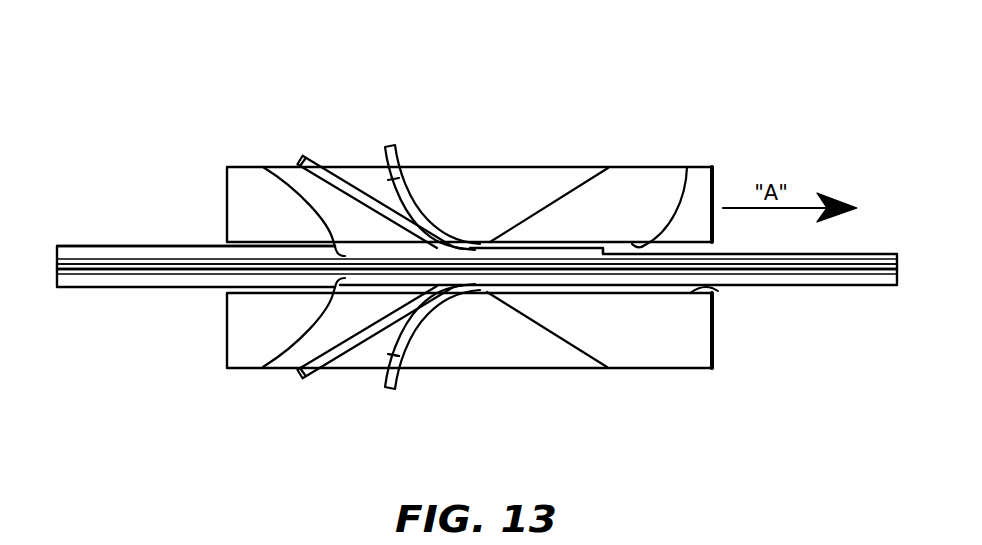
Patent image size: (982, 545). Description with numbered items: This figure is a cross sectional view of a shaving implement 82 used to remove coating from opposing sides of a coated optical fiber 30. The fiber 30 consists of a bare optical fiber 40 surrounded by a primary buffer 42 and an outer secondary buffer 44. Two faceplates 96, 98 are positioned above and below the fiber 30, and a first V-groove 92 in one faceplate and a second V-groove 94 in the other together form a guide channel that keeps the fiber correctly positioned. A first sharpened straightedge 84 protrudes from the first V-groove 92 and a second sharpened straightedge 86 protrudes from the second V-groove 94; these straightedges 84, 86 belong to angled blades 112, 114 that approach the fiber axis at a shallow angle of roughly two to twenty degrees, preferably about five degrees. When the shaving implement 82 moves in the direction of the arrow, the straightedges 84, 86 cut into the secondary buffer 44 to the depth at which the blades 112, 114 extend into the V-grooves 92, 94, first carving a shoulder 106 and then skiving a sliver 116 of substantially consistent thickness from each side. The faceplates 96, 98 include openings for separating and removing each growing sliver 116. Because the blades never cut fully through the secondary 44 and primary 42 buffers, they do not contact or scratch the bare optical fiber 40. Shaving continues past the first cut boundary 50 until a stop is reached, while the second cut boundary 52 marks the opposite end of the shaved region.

The coated optical fiber 30 is at (167, 310).
The bare optical fiber 40 is at (120, 268).
The primary buffer 42 is at (140, 262).
The secondary buffer 44 is at (102, 250).
The first cut boundary 50 is at (603, 278).
The second cut boundary 52 is at (395, 356).
The shaving implement 82 is at (469, 221).
The first sharpened straightedge 84 is at (445, 248).
The second sharpened straightedge 86 is at (447, 290).
The first V-groove 92 is at (687, 167).
The second V-groove 94 is at (711, 288).
The first faceplate 96 is at (550, 180).
The second faceplate 98 is at (538, 358).
The shoulder 106 is at (263, 167).
The angled blade 112 is at (300, 155).
The angled blade 114 is at (303, 375).
The sliver 116 is at (390, 143).